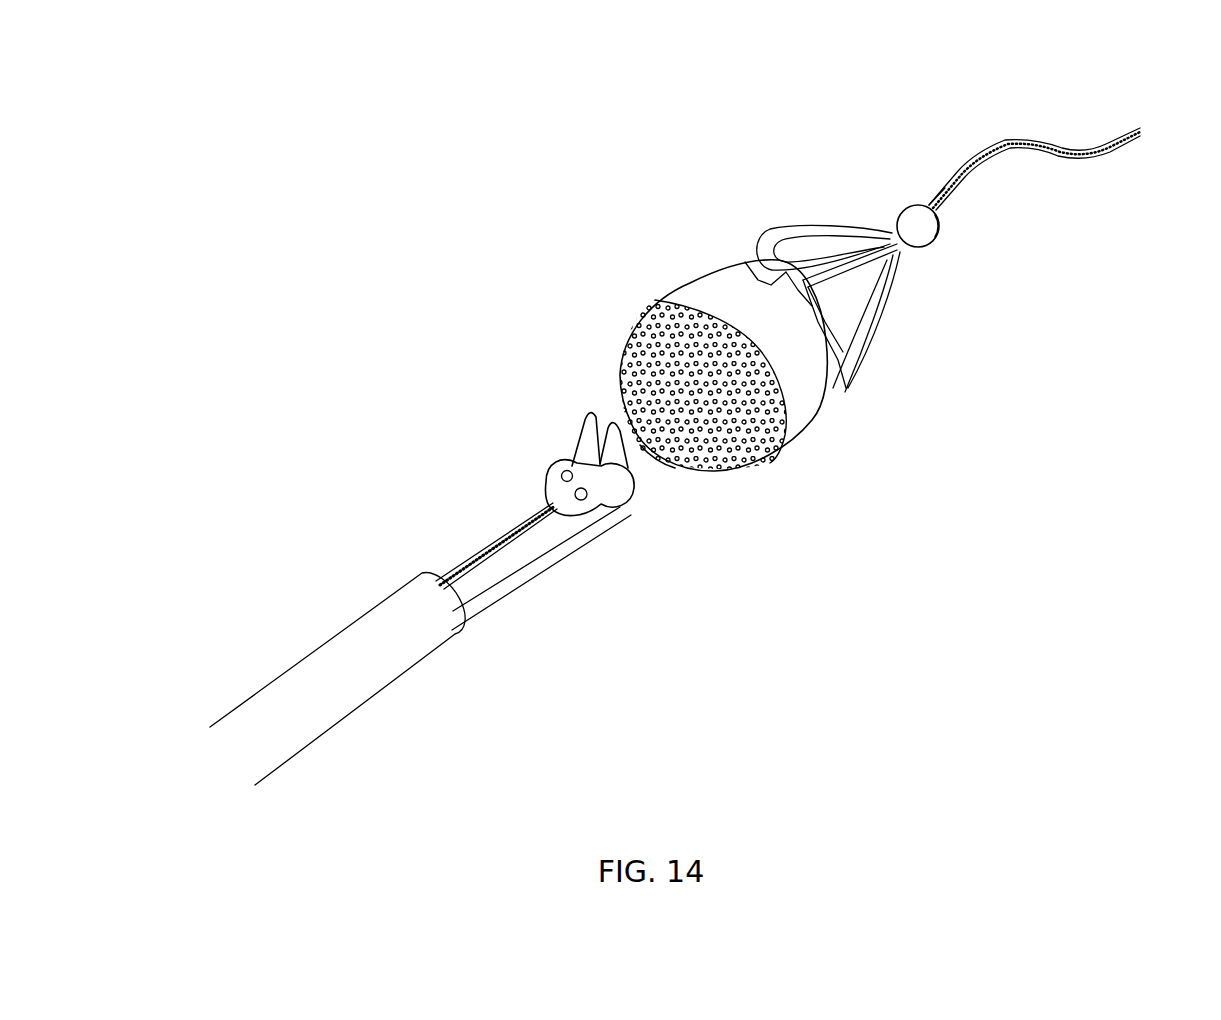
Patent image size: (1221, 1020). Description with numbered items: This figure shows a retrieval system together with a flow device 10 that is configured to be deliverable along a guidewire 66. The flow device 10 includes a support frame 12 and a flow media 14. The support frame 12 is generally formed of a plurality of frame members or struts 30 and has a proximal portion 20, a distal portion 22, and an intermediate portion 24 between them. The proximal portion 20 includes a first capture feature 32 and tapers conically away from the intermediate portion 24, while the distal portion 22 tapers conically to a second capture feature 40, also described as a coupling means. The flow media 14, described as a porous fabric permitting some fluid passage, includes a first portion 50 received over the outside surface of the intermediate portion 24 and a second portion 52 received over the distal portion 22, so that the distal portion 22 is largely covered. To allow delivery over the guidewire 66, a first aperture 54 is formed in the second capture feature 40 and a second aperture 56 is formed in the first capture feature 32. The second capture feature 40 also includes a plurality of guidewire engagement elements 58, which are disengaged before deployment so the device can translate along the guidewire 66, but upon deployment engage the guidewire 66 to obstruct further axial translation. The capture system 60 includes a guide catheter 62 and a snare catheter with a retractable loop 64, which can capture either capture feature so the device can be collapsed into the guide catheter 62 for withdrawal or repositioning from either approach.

The flow device 10 is at (720, 189).
The support frame 12 is at (888, 297).
The flow media 14 is at (627, 380).
The proximal portion 20 is at (653, 463).
The distal portion 22 is at (889, 226).
The intermediate portion 24 is at (833, 400).
The struts 30 is at (796, 226).
The first capture feature 32 is at (938, 235).
The second capture feature 40 is at (540, 475).
The first portion 50 is at (687, 290).
The second portion 52 is at (633, 337).
The first aperture 54 is at (553, 507).
The second aperture 56 is at (927, 203).
The guidewire engagement elements 58 is at (570, 493).
The capture system 60 is at (221, 557).
The guide catheter 62 is at (377, 690).
The retractable loop 64 is at (620, 500).
The guidewire 66 is at (1103, 160).